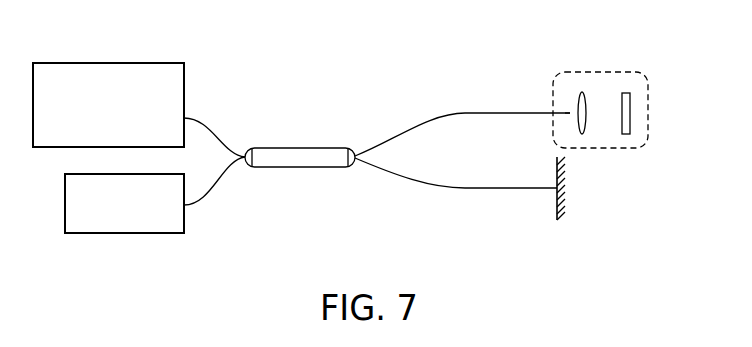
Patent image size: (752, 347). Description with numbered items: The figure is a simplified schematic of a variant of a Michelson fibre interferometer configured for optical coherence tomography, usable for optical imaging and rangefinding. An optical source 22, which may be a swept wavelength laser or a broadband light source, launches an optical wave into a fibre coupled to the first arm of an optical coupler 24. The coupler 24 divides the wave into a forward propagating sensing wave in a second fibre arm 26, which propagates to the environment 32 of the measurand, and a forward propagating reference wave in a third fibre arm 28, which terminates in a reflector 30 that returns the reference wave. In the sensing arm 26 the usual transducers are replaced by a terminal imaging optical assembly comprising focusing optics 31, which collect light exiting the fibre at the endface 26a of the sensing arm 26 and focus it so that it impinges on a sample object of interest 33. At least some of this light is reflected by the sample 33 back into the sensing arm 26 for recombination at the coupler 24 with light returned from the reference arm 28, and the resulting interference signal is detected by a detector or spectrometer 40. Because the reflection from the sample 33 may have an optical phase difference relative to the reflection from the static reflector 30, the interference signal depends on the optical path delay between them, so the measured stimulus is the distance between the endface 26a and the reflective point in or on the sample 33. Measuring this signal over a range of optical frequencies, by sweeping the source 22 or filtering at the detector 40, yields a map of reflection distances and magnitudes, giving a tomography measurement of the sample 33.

The optical source 22 is at (125, 117).
The detector or spectrometer 40 is at (141, 217).
The optical coupler 24 is at (293, 167).
The second fibre arm 26 is at (410, 126).
The endface 26a is at (568, 112).
The third fibre arm 28 is at (395, 172).
The reflector 30 is at (565, 203).
The focusing optics 31 is at (587, 121).
The environment 32 is at (608, 72).
The sample object of interest 33 is at (632, 117).